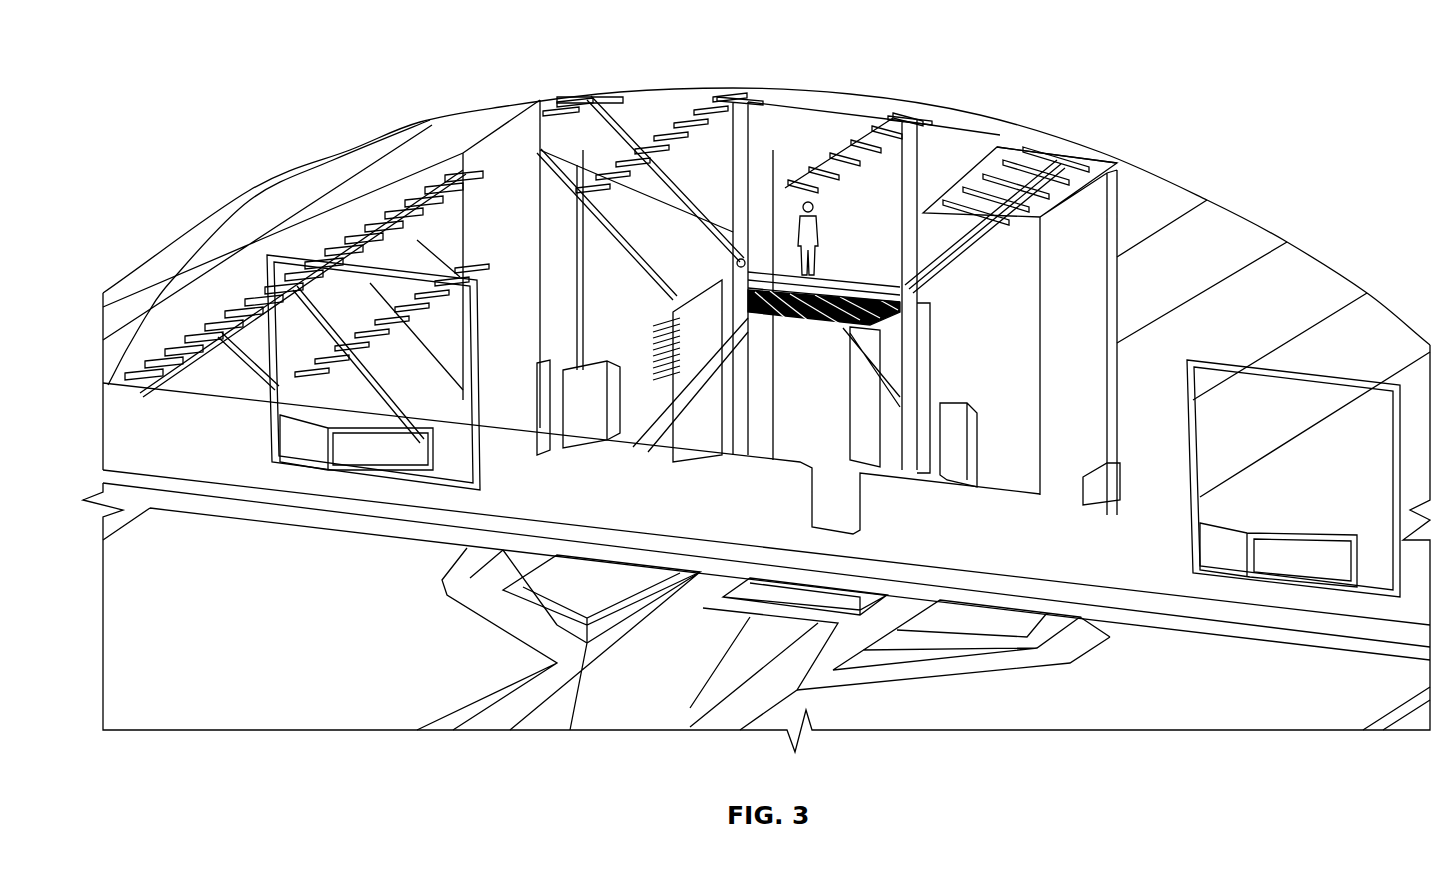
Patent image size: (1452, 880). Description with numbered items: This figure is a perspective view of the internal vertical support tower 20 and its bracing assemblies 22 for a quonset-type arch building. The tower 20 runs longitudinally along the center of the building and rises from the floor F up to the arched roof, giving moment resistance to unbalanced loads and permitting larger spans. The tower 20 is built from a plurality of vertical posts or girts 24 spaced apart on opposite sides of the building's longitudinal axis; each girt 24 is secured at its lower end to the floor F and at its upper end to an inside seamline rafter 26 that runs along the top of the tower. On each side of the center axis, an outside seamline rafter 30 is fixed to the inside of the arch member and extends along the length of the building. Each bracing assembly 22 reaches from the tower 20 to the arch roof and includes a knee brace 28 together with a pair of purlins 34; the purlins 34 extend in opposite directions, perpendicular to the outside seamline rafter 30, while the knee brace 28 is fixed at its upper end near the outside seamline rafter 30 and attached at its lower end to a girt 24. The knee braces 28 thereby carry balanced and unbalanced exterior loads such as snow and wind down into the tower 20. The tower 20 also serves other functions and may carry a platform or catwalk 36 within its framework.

The vertical support tower 20 is at (745, 180).
The bracing assemblies 22 is at (590, 68).
The vertical posts or girts 24 is at (755, 116).
The inside seamline rafter 26 is at (745, 118).
The knee brace 28 is at (650, 135).
The outside seamline rafters 30 is at (550, 105).
The purlins 34 is at (605, 100).
The platform or catwalk 36 is at (858, 283).
The forward direction F is at (848, 145).